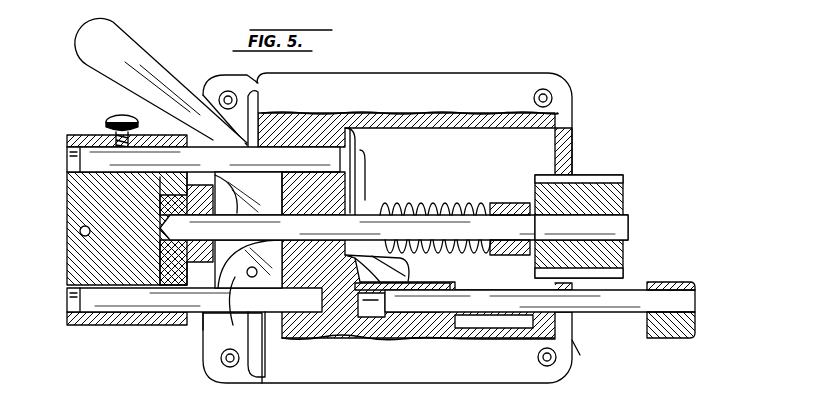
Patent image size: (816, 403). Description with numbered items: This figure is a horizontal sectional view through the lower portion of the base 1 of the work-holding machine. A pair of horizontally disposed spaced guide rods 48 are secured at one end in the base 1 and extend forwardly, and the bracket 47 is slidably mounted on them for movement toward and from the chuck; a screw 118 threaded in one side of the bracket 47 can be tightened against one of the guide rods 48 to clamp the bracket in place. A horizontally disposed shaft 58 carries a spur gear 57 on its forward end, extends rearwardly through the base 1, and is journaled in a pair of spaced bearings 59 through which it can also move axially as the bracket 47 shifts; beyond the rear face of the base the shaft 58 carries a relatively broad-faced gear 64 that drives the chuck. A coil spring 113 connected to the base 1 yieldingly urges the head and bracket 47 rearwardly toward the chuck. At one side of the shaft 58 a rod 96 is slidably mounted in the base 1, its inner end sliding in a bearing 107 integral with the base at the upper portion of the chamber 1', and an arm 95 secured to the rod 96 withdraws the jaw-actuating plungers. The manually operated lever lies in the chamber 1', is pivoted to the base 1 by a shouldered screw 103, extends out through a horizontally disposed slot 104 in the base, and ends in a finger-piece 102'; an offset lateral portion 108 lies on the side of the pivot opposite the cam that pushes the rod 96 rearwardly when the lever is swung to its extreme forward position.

The base 1 is at (582, 360).
The chamber 1' is at (404, 228).
The bracket 47 is at (101, 322).
The guide rods 48 is at (90, 157).
The spur gear 57 is at (205, 268).
The shaft 58 is at (418, 227).
The bearings 59 is at (348, 216).
The broad-faced gear 64 is at (616, 196).
The arm 95 is at (692, 338).
The rod 96 is at (606, 308).
The finger-piece 102' is at (154, 72).
The shouldered screw 103 is at (362, 256).
The slot 104 is at (244, 84).
The bearing 107 is at (441, 286).
The lateral portion 108 is at (233, 280).
The coil spring 113 is at (462, 213).
The screw 118 is at (118, 112).